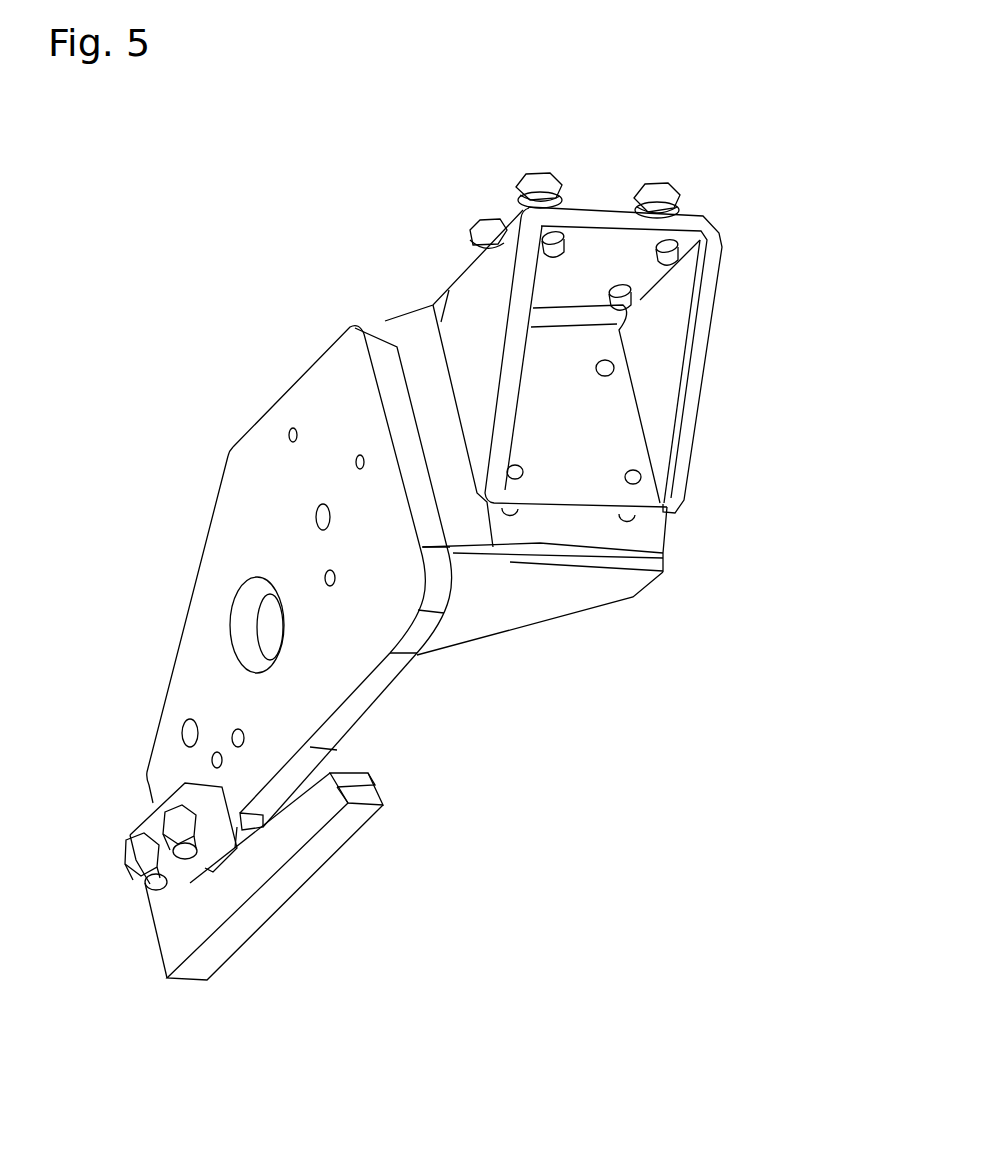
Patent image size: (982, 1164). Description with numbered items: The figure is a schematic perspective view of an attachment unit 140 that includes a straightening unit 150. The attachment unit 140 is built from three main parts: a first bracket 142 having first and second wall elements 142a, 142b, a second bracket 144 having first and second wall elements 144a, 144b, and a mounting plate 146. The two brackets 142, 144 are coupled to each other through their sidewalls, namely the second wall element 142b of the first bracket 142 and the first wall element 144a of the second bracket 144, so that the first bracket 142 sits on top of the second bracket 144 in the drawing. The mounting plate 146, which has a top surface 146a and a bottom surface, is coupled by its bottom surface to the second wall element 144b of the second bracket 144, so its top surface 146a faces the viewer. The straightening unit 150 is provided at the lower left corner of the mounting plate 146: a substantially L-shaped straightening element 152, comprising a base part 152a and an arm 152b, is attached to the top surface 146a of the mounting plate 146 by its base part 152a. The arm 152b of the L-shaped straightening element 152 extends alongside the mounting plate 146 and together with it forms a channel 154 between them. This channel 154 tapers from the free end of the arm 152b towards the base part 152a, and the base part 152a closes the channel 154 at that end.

The attachment unit 140 is at (284, 241).
The first bracket 142 is at (648, 355).
The first wall element of first bracket 142a is at (610, 257).
The second wall element of first bracket 142b is at (582, 424).
The second bracket 144 is at (520, 590).
The first wall element of second bracket 144a is at (580, 533).
The second wall element of second bracket 144b is at (392, 326).
The mounting plate 146 is at (248, 428).
The top surface of mounting plate 146a is at (260, 528).
The straightening unit 150 is at (466, 828).
The L-shaped straightening element 152 is at (262, 889).
The base part 152a is at (180, 903).
The arm 152b is at (310, 807).
The channel 154 is at (352, 757).